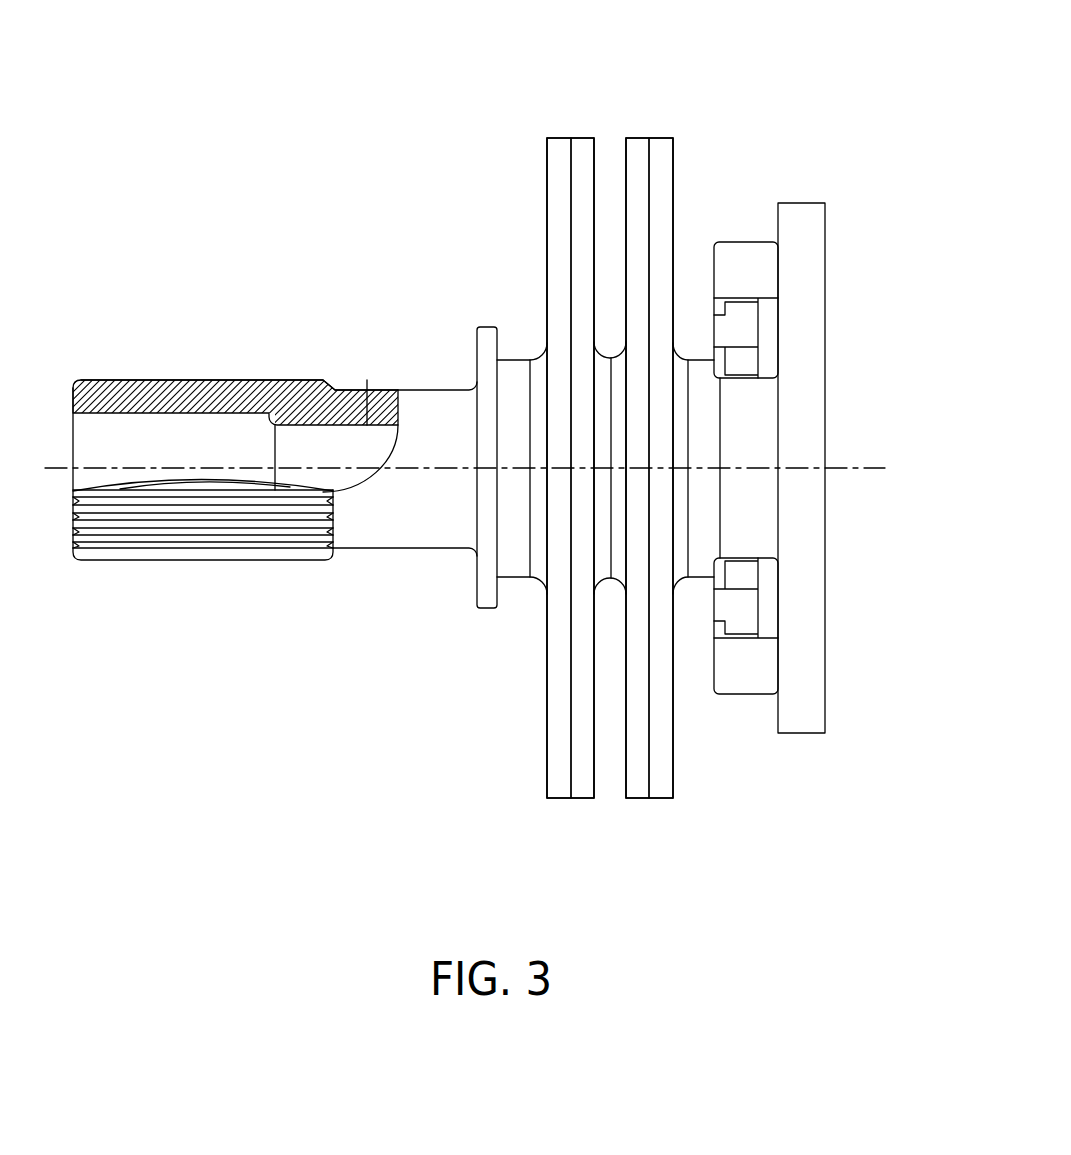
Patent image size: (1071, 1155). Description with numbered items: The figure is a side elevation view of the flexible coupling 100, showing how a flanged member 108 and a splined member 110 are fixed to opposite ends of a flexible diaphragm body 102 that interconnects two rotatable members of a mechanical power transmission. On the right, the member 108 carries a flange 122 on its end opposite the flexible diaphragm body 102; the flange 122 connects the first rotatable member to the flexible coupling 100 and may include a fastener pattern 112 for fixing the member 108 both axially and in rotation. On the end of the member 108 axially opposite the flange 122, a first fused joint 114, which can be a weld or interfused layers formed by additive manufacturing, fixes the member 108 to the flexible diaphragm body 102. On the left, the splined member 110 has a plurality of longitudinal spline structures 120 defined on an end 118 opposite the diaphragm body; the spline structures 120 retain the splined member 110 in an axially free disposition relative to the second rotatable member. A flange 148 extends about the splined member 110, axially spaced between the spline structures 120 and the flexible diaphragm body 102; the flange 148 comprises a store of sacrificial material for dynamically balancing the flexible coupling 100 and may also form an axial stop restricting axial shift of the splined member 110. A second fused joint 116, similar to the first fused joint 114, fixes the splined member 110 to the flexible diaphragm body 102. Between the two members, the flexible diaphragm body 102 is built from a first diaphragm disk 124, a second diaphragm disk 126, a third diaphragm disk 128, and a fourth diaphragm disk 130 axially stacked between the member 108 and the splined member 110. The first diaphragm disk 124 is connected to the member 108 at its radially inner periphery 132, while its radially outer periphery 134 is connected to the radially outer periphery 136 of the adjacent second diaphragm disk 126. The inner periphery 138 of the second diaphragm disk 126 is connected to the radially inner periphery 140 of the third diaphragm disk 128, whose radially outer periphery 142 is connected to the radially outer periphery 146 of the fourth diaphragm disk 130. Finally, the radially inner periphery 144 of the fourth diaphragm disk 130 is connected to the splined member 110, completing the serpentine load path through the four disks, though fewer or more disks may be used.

The flexible coupling 100 is at (279, 760).
The flexible diaphragm body 102 is at (612, 822).
The member 108 is at (797, 760).
The splined member 110 is at (247, 622).
The fastener pattern 112 is at (825, 592).
The first fused joint 114 is at (689, 521).
The second fused joint 116 is at (528, 548).
The end 118 is at (322, 355).
The longitudinal spline structures 120 is at (108, 377).
The flange 122 is at (835, 339).
The first diaphragm disk 124 is at (663, 160).
The second diaphragm disk 126 is at (637, 153).
The third diaphragm disk 128 is at (580, 155).
The fourth diaphragm disk 130 is at (558, 185).
The radially inner periphery 132 is at (682, 348).
The radially outer periphery 134 is at (690, 141).
The radially outer periphery 136 is at (636, 128).
The radially inner periphery 138 is at (618, 347).
The radially inner periphery 140 is at (603, 345).
The radially outer periphery 142 is at (600, 138).
The radially inner periphery 144 is at (532, 348).
The radially outer periphery 146 is at (532, 152).
The flange 148 is at (487, 593).